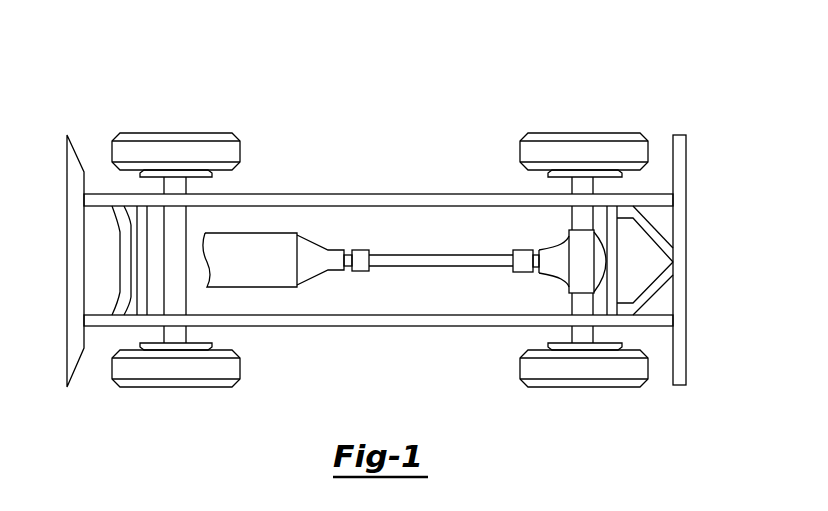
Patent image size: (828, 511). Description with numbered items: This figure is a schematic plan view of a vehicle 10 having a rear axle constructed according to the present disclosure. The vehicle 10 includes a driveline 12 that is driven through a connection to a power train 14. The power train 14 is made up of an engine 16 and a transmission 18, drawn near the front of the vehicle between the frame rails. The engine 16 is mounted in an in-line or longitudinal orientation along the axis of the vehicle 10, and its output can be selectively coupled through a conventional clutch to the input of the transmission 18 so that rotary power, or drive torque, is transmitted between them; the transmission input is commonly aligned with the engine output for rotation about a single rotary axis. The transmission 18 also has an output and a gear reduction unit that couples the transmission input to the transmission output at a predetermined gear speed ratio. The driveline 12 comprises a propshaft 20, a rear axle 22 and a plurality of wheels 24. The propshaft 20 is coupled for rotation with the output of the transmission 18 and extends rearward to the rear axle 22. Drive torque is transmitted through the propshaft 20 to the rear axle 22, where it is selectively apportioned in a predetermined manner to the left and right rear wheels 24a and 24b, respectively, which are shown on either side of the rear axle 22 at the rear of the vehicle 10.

The vehicle 10 is at (336, 138).
The driveline 12 is at (533, 243).
The power train 14 is at (289, 283).
The engine 16 is at (258, 270).
The transmission 18 is at (331, 250).
The propshaft 20 is at (420, 260).
The rear axle 22 is at (560, 286).
The wheels 24 is at (592, 227).
The left rear wheel 24a is at (530, 367).
The right rear wheel 24b is at (583, 145).